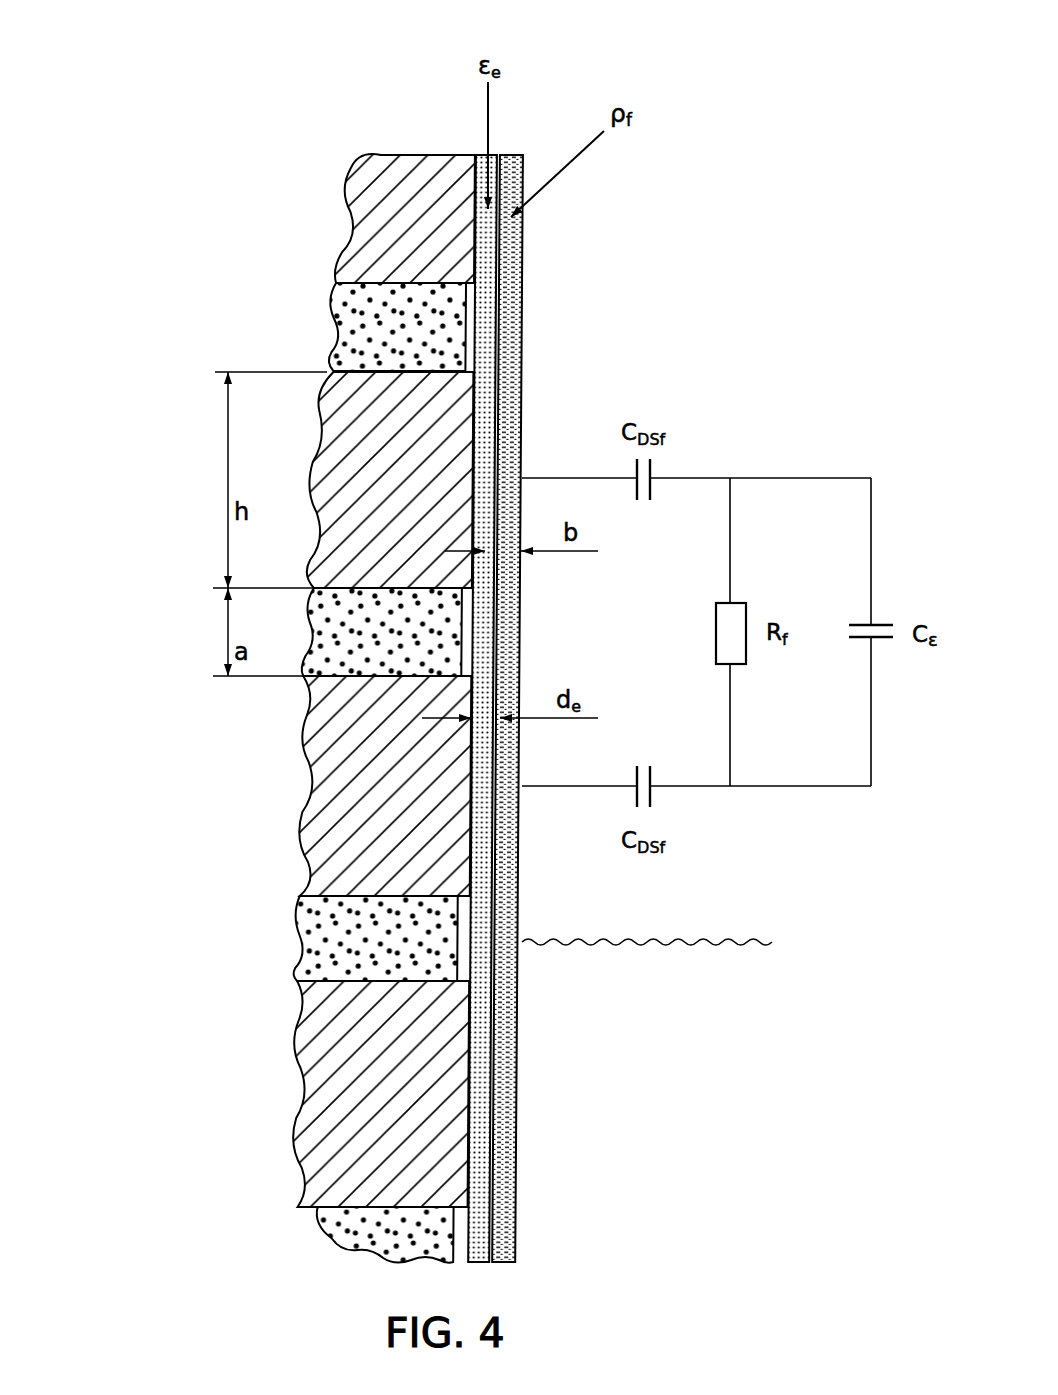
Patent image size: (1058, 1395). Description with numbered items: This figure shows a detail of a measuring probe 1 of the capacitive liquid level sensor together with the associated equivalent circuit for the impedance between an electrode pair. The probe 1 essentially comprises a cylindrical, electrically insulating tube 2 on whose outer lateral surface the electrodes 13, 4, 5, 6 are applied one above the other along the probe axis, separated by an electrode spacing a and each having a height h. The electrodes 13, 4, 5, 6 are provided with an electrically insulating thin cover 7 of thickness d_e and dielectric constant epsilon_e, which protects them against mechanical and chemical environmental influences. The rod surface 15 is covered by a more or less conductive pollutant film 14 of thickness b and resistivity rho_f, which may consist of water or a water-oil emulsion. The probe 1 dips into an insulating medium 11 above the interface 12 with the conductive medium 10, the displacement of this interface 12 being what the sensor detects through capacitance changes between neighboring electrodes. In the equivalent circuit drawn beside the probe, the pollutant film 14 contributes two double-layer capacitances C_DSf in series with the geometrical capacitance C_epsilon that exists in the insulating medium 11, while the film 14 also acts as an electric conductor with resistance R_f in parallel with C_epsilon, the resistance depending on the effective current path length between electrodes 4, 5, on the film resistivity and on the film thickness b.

The measuring probe 1 is at (585, 633).
The tube 2 is at (371, 632).
The electrode 4 is at (383, 479).
The electrode 5 is at (369, 786).
The electrode 6 is at (389, 1141).
The cover 7 is at (272, 970).
The conductive medium 10 is at (689, 1007).
The insulating medium 11 is at (689, 908).
The interface 12 is at (707, 947).
The electrode 13 is at (267, 217).
The pollutant film 14 is at (502, 1191).
The rod surface 15 is at (482, 1097).